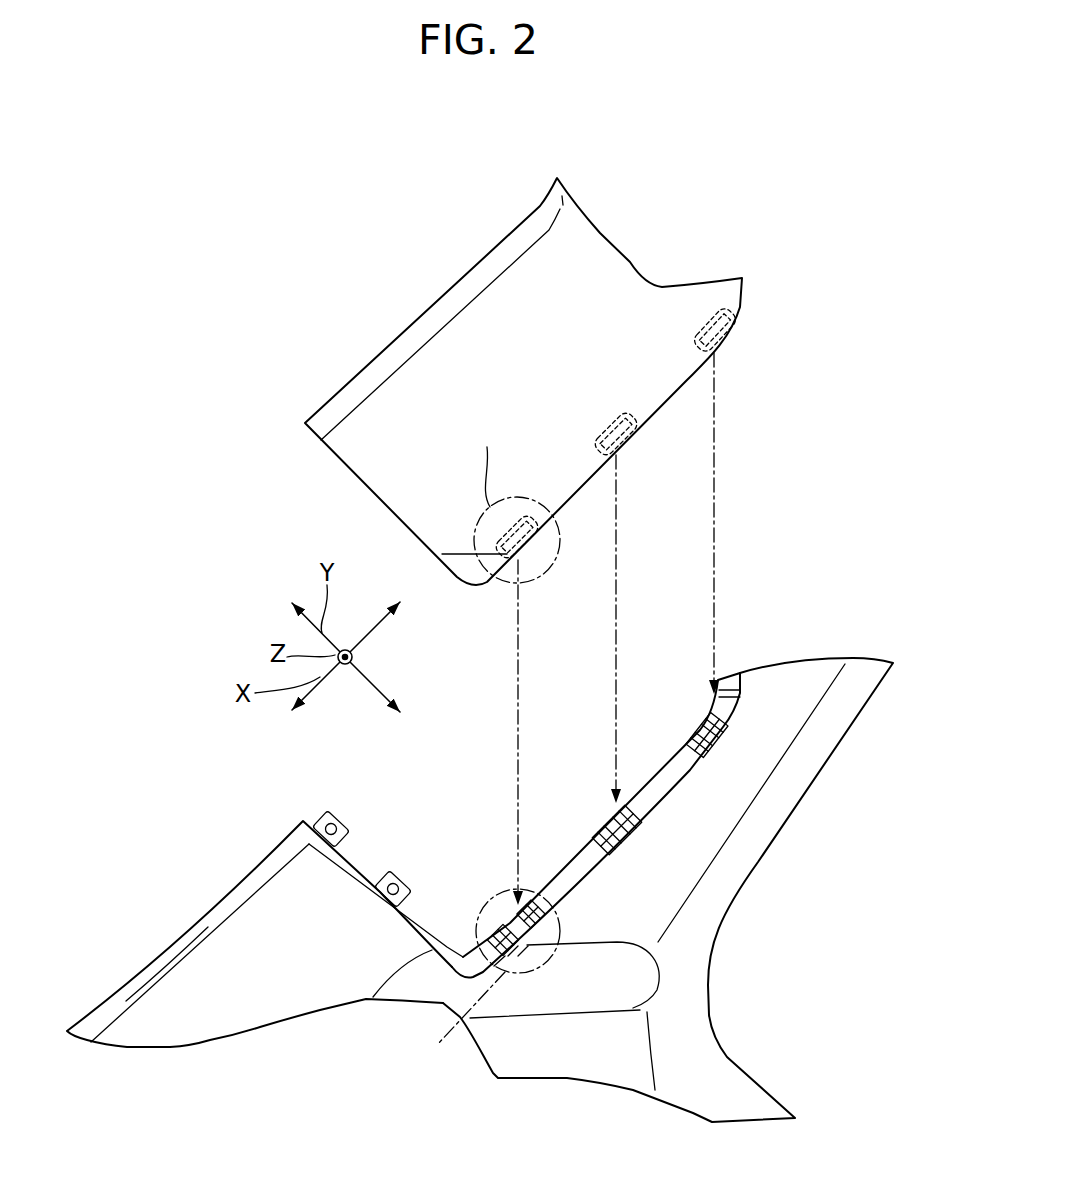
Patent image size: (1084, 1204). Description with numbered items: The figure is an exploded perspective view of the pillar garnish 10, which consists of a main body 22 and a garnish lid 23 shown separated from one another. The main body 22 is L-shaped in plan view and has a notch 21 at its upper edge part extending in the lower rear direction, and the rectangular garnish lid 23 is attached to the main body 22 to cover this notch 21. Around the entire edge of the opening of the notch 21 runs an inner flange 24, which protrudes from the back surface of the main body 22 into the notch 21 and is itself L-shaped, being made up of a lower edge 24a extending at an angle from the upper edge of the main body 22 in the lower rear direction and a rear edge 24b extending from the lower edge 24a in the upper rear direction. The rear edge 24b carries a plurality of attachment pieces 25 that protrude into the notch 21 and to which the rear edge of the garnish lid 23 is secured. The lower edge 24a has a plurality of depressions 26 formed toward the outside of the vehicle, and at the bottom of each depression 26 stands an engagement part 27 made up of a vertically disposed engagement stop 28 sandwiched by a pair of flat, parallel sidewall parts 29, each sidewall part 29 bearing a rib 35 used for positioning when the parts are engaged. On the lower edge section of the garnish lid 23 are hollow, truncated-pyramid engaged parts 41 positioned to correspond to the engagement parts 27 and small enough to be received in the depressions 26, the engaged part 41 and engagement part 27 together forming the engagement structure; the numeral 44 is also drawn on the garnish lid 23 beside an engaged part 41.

The pillar garnish 10 is at (797, 170).
The notch 21 is at (448, 927).
The main body 22 is at (826, 650).
The garnish lid 23 is at (640, 257).
The inner flange 24 is at (524, 812).
The lower edge 24a is at (665, 763).
The rear edge 24b is at (417, 914).
The attachment pieces 25 is at (403, 872).
The depressions 26 is at (500, 960).
The engagement part 27 is at (528, 903).
The engagement stop 28 is at (510, 928).
The sidewall parts 29 is at (513, 950).
The rib 35 is at (523, 950).
The engaged part 41 is at (733, 340).
The protrusion 44 is at (616, 433).